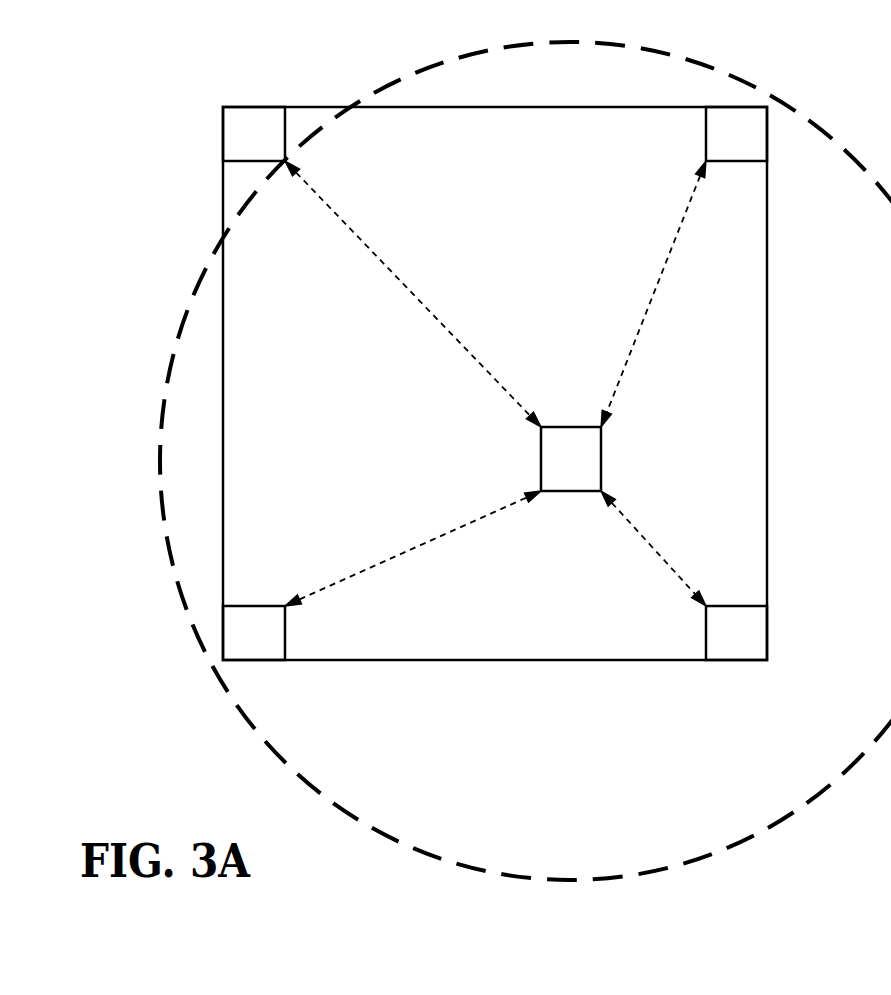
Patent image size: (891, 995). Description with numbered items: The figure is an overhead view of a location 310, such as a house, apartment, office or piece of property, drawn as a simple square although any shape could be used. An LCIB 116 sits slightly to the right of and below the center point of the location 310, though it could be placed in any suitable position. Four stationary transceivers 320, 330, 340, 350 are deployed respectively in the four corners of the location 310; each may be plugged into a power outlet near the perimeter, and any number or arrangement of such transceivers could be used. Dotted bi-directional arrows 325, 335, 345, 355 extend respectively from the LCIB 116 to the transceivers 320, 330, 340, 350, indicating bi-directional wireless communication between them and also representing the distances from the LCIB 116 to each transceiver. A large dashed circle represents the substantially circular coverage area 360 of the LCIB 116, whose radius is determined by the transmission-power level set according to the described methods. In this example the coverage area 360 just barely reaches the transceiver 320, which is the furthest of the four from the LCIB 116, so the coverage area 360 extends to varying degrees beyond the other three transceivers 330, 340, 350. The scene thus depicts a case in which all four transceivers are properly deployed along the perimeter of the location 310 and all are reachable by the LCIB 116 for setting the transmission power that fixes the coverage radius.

The location 310 is at (495, 383).
The coverage area 360 is at (525, 461).
The LCIB 116 is at (571, 459).
The stationary transceiver 320 is at (254, 134).
The stationary transceiver 330 is at (736, 134).
The stationary transceiver 340 is at (254, 633).
The stationary transceiver 350 is at (736, 633).
The dotted bi-directional arrow 325 is at (376, 253).
The dotted bi-directional arrow 335 is at (648, 320).
The dotted bi-directional arrow 345 is at (358, 574).
The dotted bi-directional arrow 355 is at (645, 538).